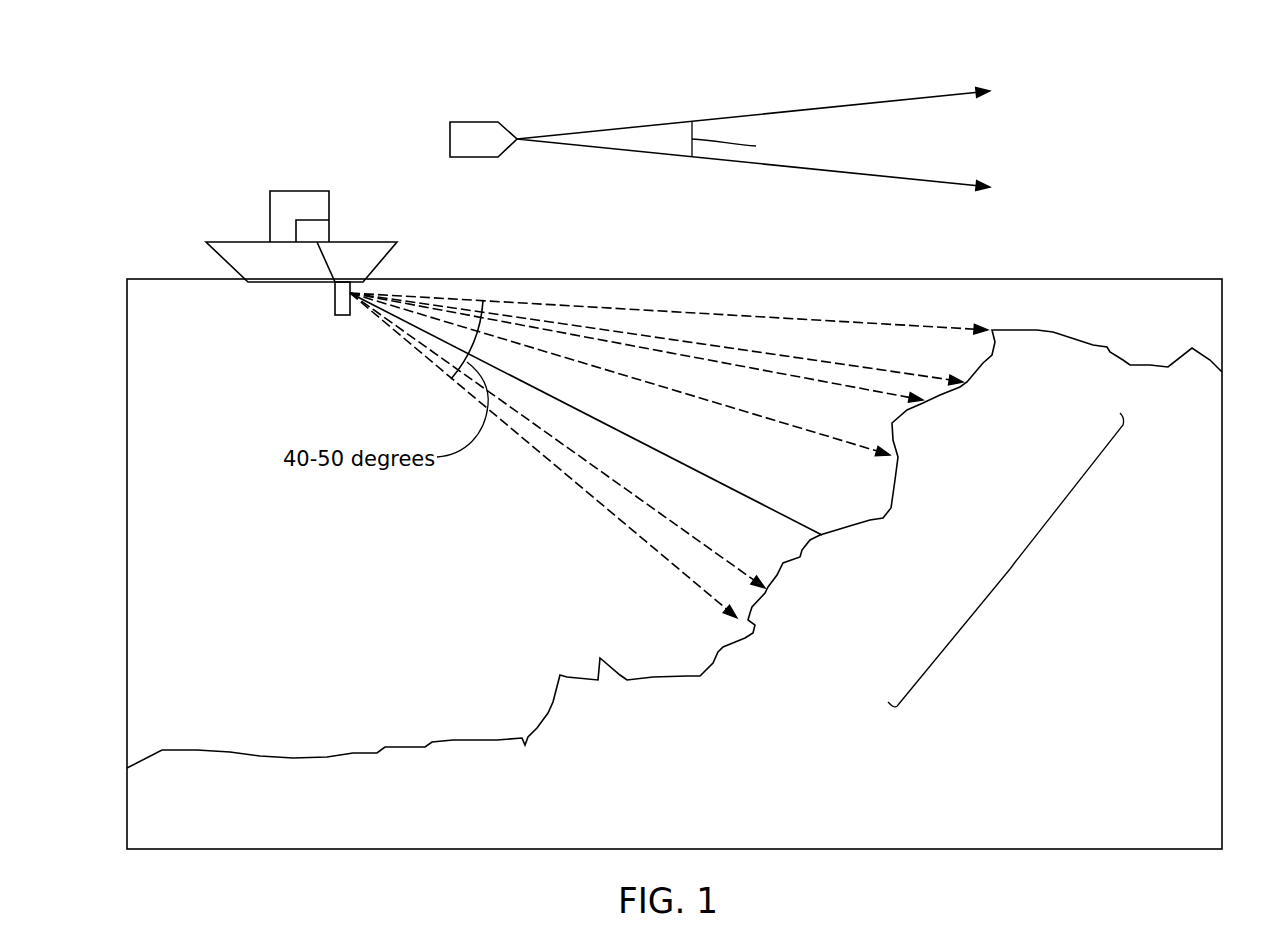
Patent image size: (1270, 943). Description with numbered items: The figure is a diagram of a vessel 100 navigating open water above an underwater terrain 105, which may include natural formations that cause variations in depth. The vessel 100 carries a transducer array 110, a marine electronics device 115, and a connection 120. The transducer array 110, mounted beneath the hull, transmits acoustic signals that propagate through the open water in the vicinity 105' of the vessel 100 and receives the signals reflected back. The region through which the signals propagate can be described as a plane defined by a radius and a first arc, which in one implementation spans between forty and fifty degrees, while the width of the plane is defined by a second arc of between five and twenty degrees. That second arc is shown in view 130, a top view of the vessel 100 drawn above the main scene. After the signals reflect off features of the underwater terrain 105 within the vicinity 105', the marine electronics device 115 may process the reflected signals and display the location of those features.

The vessel 100 is at (270, 210).
The underwater terrain 105 is at (674, 549).
The vicinity 105' is at (1006, 560).
The transducer array 110 is at (333, 303).
The marine electronics device 115 is at (308, 232).
The connection 120 is at (333, 263).
The view 130 is at (636, 89).